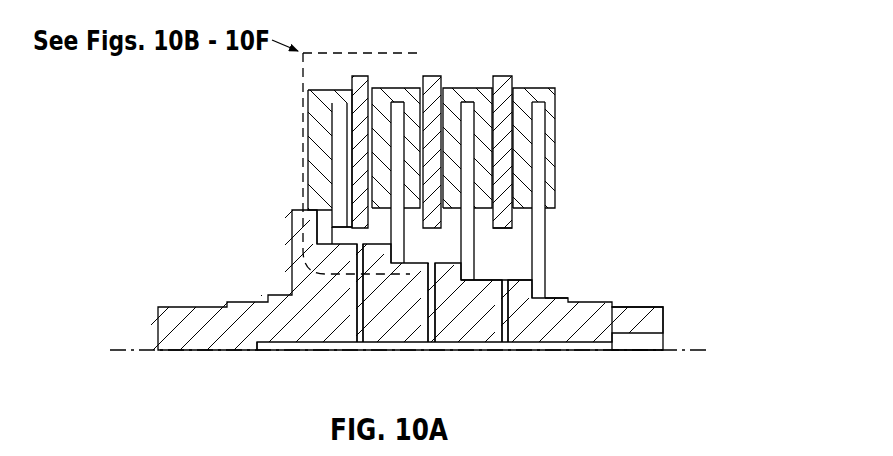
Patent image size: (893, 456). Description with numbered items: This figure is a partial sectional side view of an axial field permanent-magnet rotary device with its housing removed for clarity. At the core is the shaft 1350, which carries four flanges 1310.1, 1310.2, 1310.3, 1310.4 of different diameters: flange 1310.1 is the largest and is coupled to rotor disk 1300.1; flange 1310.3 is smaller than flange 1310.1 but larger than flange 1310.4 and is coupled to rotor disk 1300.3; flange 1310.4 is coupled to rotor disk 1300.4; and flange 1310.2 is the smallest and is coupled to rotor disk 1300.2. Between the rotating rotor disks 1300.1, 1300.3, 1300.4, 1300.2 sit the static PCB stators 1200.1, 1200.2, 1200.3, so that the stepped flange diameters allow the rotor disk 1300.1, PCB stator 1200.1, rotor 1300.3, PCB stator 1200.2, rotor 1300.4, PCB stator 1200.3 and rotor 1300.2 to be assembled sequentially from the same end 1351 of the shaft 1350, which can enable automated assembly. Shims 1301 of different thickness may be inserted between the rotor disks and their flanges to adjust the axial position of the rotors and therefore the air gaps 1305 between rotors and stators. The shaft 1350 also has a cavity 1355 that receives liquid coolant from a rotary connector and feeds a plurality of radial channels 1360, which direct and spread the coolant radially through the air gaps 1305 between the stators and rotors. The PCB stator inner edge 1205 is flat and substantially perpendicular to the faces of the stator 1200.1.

The rotor disk 1300.1 is at (323, 103).
The rotor disk 1300.2 is at (557, 107).
The rotor disk 1300.3 is at (388, 95).
The rotor disk 1300.4 is at (432, 76).
The PCB stator 1200.1 is at (357, 150).
The PCB stator 1200.2 is at (355, 180).
The PCB stator 1200.3 is at (540, 114).
The PCB stator inner edge 1205 is at (506, 219).
The air gap 1305 is at (494, 78).
The shim 1301 is at (386, 254).
The flange 1310.1 is at (405, 246).
The flange 1310.2 is at (555, 291).
The flange 1310.3 is at (404, 257).
The flange 1310.4 is at (468, 277).
The shaft 1350 is at (190, 323).
The end of the shaft 1351 is at (668, 320).
The cavity 1355 is at (322, 351).
The radial channel 1360 is at (368, 334).